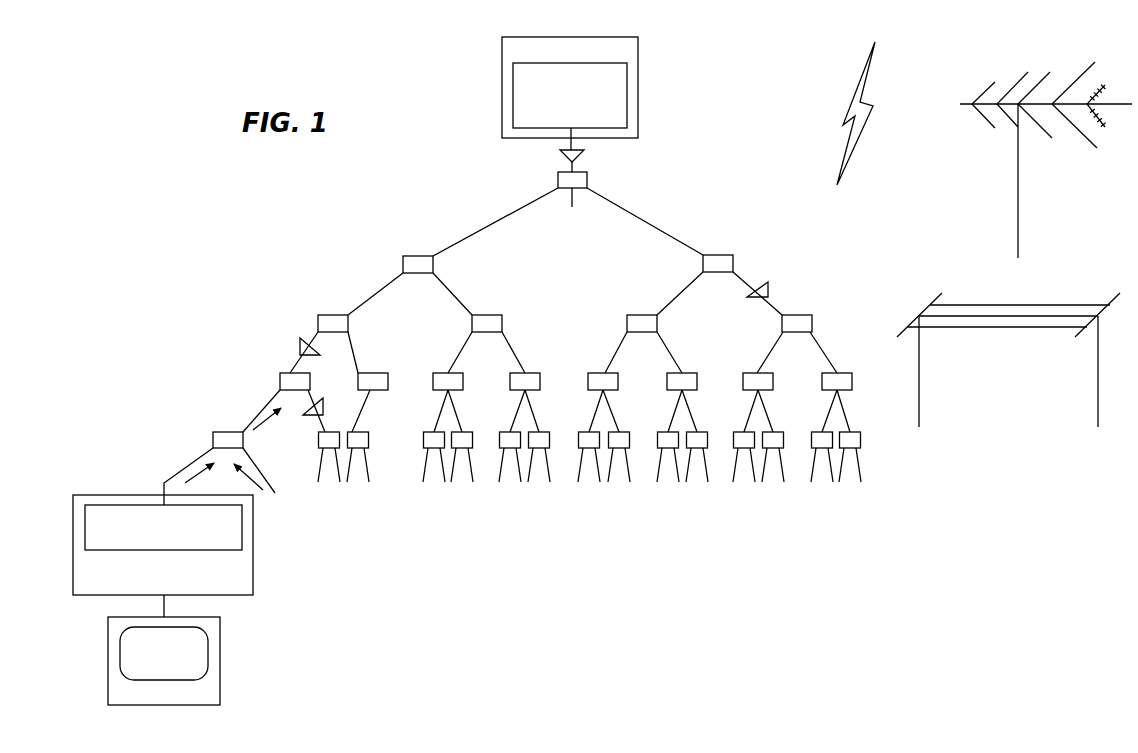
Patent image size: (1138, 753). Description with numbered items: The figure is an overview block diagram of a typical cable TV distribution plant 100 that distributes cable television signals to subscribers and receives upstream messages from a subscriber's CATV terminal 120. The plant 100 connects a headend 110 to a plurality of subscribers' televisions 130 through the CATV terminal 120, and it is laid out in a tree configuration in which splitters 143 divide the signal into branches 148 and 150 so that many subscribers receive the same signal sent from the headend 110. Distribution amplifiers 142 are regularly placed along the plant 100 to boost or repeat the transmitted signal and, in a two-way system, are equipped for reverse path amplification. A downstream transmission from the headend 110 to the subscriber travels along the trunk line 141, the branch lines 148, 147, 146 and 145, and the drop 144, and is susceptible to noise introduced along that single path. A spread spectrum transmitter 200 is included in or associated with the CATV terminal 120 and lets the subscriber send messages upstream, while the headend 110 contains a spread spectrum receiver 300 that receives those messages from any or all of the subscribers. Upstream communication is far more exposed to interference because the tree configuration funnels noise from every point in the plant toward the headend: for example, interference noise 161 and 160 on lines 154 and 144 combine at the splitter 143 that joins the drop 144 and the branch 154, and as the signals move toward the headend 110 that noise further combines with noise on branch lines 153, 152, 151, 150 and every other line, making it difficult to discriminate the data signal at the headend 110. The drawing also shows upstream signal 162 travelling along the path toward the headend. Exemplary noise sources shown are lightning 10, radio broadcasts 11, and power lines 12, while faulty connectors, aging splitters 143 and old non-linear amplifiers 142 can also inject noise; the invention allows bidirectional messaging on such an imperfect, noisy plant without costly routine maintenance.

The lightning 10 is at (870, 70).
The radio broadcasts 11 is at (1093, 73).
The power lines 12 is at (1045, 315).
The cable TV distribution plant 100 is at (330, 270).
The headend 110 is at (640, 50).
The CATV terminal 120 is at (253, 563).
The television 130 is at (220, 650).
The trunk line 141 is at (562, 148).
The distribution amplifier 142 is at (560, 163).
The splitter 143 is at (228, 440).
The drop 144 is at (172, 473).
The branch line 145 is at (248, 417).
The branch line 146 is at (293, 363).
The branch line 147 is at (380, 288).
The branch 148 is at (508, 213).
The branch 150 is at (660, 220).
The branch line 151 is at (457, 295).
The branch line 152 is at (357, 350).
The branch line 153 is at (312, 398).
The branch 154 is at (245, 463).
The interference noise 160 is at (185, 470).
The interference noise 161 is at (260, 475).
The upstream signal path 162 is at (262, 412).
The spread spectrum transmitter 200 is at (242, 528).
The spread spectrum receiver 300 is at (627, 82).